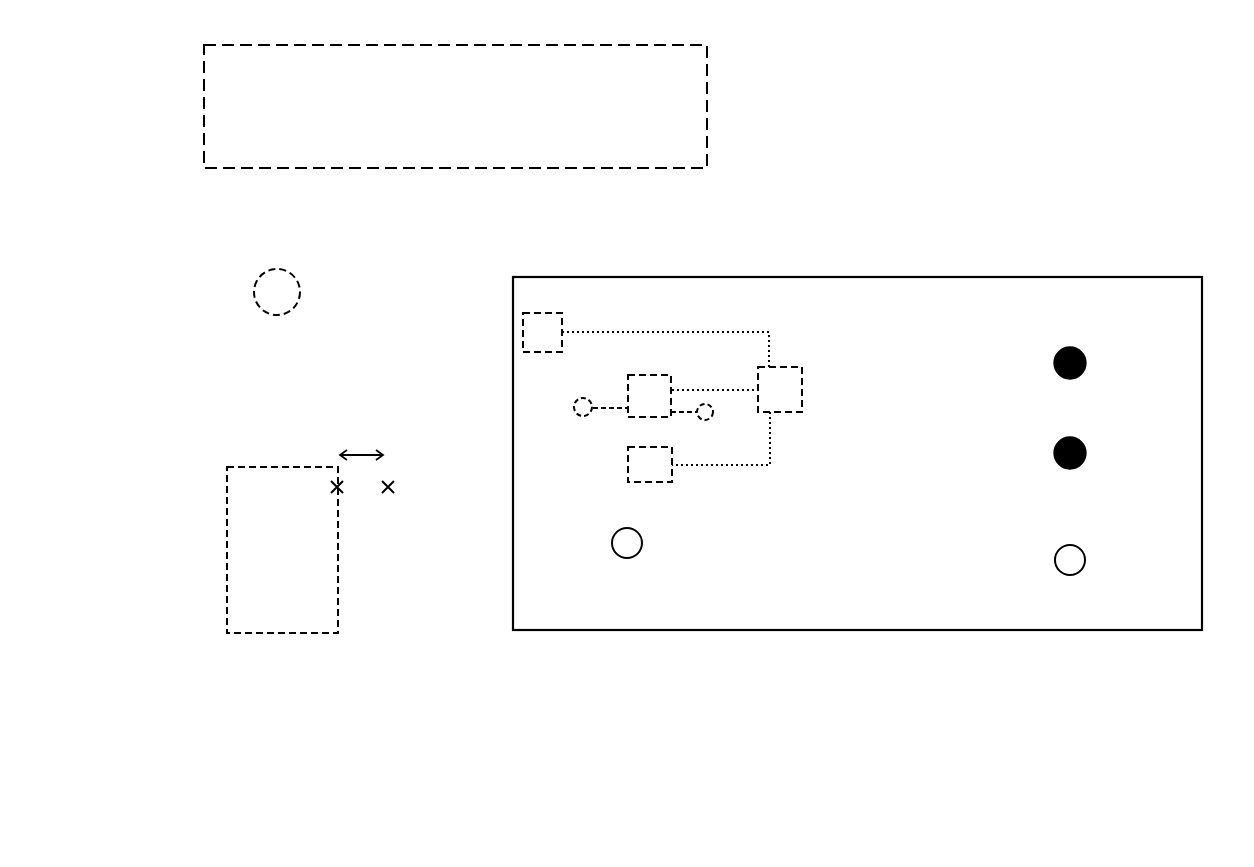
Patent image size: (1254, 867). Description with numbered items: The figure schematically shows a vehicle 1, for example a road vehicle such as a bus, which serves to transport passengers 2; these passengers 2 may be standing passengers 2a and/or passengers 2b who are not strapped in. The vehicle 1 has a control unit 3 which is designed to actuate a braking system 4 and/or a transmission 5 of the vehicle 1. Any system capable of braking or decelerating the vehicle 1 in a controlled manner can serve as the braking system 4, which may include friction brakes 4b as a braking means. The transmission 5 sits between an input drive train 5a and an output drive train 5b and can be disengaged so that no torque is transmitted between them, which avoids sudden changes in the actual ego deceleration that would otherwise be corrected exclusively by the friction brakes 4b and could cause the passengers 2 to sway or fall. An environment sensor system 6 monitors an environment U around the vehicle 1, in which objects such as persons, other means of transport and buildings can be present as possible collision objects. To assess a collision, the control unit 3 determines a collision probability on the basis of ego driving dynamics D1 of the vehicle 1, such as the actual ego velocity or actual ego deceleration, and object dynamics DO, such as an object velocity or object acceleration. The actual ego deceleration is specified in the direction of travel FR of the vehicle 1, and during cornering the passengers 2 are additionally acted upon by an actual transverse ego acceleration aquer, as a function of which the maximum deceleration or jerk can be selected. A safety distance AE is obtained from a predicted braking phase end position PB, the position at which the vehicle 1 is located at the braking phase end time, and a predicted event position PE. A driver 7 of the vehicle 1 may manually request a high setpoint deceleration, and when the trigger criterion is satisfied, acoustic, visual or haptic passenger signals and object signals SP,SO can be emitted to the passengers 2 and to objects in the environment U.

The vehicle 1 is at (701, 615).
The passengers 2 is at (1118, 468).
The standing passengers 2a is at (1070, 380).
The passengers who are not strapped in 2b is at (1085, 560).
The control unit 3 is at (802, 388).
The braking system 4 is at (628, 457).
The friction brakes 4b is at (641, 473).
The transmission 5 is at (672, 377).
The input drive train 5a is at (622, 403).
The output drive train 5b is at (680, 420).
The environment sensor system 6 is at (562, 314).
The driver 7 is at (642, 543).
The environment U is at (438, 318).
The predicted event position PE is at (336, 487).
The predicted braking phase end position PB is at (389, 487).
The safety distance AE is at (368, 454).
The direction of travel FR is at (513, 593).
The ego driving dynamics D1 is at (478, 619).
The object dynamics DO is at (227, 618).
The passenger signals and object signals SP,SO is at (790, 413).
The actual transverse ego acceleration aquer is at (811, 605).